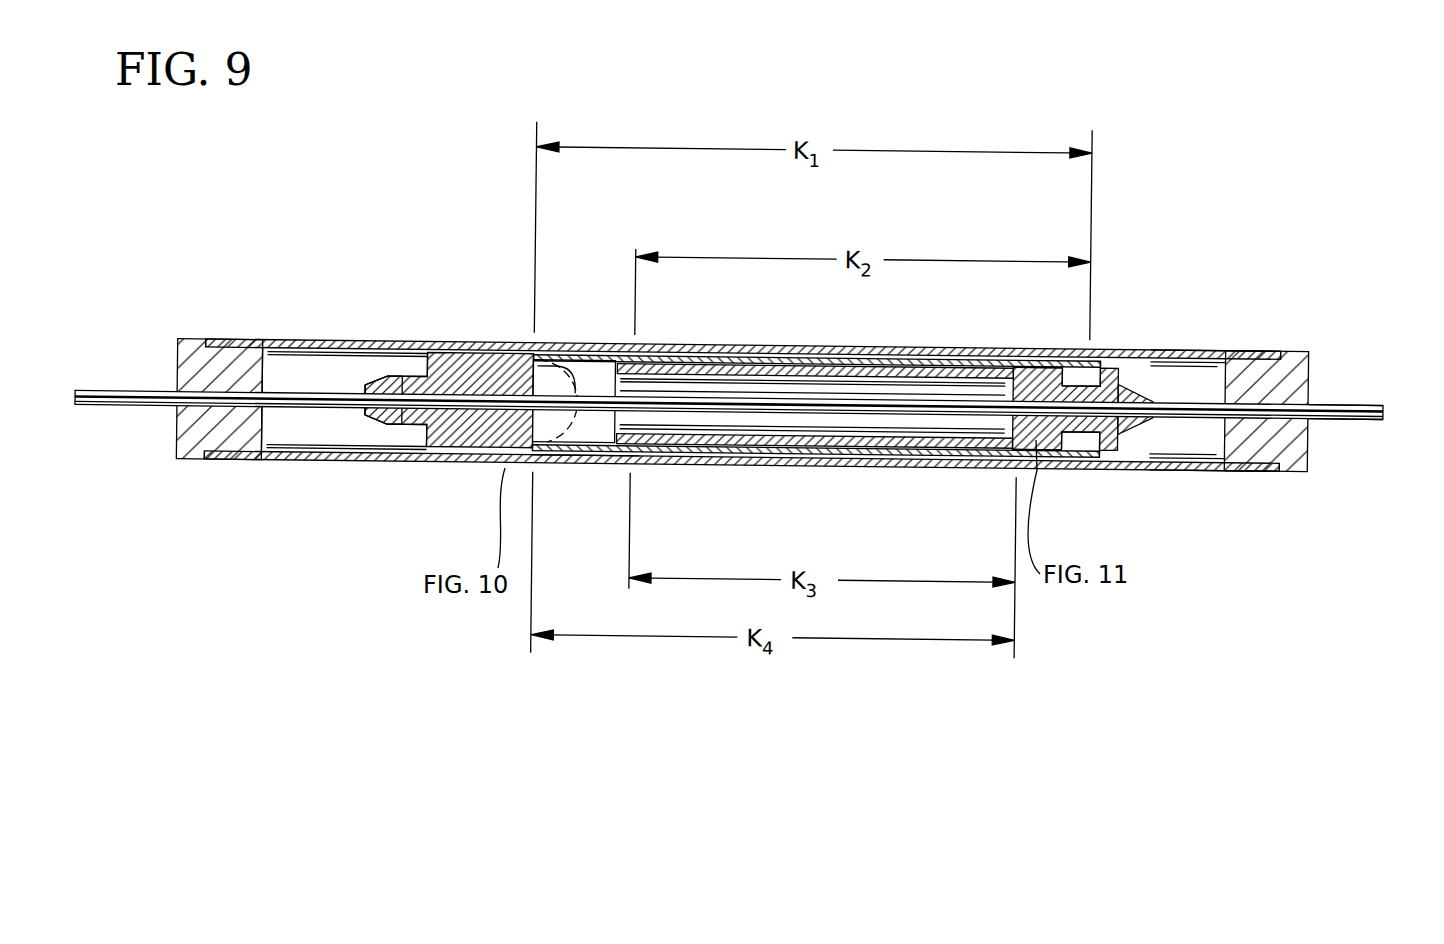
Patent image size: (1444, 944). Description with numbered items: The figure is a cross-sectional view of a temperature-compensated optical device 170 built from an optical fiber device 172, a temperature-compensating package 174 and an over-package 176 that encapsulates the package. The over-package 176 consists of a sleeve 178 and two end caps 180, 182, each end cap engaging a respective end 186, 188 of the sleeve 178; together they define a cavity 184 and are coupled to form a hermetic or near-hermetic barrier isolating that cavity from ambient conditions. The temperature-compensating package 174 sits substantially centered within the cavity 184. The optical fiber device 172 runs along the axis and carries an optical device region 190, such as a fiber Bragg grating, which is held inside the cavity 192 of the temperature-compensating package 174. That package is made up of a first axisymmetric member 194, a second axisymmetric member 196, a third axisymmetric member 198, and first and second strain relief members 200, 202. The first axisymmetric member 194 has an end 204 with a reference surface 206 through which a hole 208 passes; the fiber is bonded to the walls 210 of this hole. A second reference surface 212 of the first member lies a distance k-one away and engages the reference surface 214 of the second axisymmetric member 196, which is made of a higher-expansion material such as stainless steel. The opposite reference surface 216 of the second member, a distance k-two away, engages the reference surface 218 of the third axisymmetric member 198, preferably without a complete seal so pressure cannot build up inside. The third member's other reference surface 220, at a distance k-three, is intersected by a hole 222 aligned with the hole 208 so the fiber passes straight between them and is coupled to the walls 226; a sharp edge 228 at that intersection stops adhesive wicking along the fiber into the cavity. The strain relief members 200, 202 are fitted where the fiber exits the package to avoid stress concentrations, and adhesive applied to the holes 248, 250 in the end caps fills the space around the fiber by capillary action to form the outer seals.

The temperature-compensated optical device 170 is at (1180, 342).
The optical fiber device 172 is at (1340, 418).
The temperature-compensating package 174 is at (420, 452).
The over-package 176 is at (399, 316).
The sleeve 178 is at (300, 340).
The end cap 180 is at (187, 338).
The end cap 182 is at (1308, 347).
The cavity 184 is at (268, 452).
The end of the sleeve 186 is at (232, 340).
The end of the sleeve 188 is at (1285, 350).
The optical device region 190 is at (600, 462).
The cavity 192 is at (582, 462).
The first axisymmetric member 194 is at (422, 345).
The second axisymmetric member 196 is at (1140, 385).
The third axisymmetric member 198 is at (1138, 462).
The first strain relief member 200 is at (370, 388).
The second strain relief member 202 is at (1219, 326).
The end 204 is at (405, 447).
The reference surface 206 is at (540, 362).
The hole 208 is at (608, 360).
The walls 210 is at (503, 392).
The reference surface 212 is at (1060, 350).
The reference surface 214 is at (1100, 350).
The reference surface 216 is at (700, 347).
The reference surface 218 is at (606, 350).
The reference surface 220 is at (857, 462).
The hole 222 is at (992, 400).
The walls 226 is at (1060, 440).
The sharp edge 228 is at (968, 462).
The hole 248 is at (177, 390).
The hole 250 is at (1308, 398).